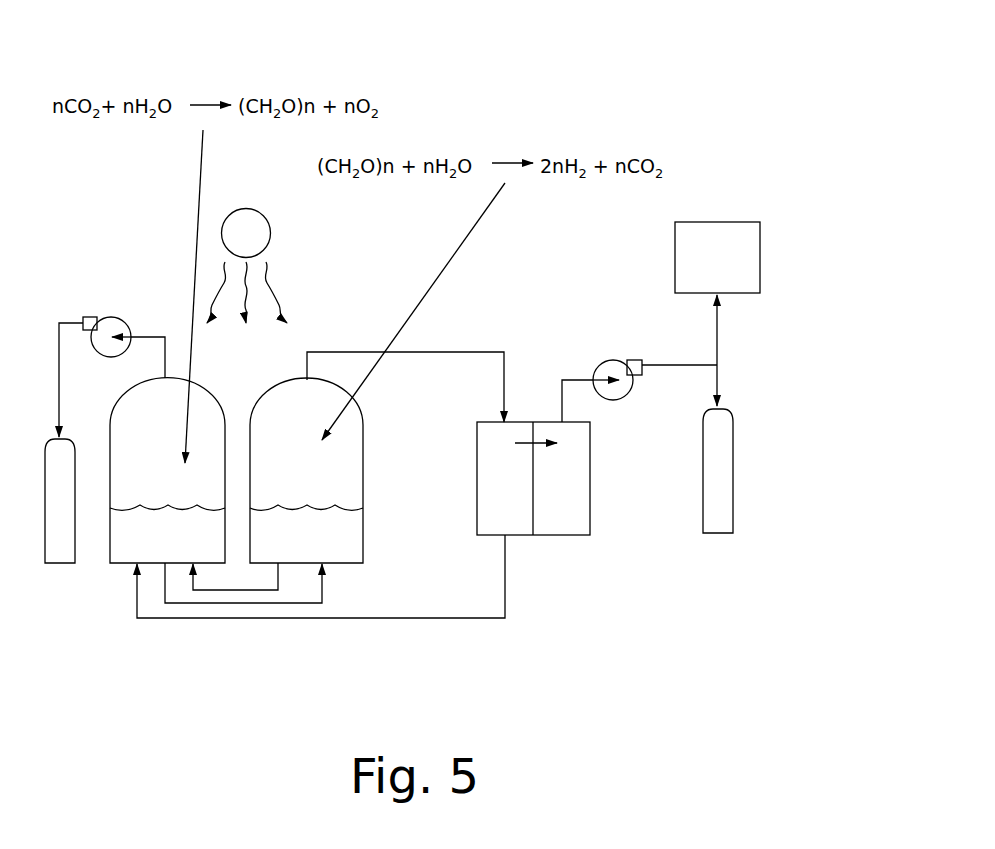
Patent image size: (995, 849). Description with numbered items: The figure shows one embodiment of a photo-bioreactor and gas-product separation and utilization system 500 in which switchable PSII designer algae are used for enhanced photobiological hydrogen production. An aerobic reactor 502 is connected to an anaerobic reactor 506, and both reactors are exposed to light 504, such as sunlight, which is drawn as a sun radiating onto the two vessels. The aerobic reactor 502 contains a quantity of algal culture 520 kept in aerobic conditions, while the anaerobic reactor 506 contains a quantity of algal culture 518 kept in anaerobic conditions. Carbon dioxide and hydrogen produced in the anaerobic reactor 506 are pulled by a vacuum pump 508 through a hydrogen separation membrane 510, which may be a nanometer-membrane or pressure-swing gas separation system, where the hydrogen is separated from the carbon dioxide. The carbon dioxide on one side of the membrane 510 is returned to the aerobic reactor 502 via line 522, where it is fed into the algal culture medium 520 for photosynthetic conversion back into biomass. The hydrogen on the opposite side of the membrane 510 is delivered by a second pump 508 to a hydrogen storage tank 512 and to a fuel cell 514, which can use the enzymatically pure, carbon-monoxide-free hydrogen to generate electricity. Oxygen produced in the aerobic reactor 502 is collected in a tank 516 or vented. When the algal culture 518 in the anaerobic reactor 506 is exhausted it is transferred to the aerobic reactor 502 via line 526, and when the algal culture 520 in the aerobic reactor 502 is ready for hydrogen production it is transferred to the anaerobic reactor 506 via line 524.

The photo-bioreactor and gas-product separation and utilization system 500 is at (673, 85).
The aerobic reactor 502 is at (225, 397).
The light 504 is at (302, 277).
The anaerobic reactor 506 is at (363, 422).
The vacuum pump 508 is at (95, 317).
The H2 separation membrane 510 is at (477, 478).
The H2 storage tank 512 is at (703, 473).
The fuel cell 514 is at (733, 295).
The tank 516 is at (62, 565).
The algal culture 518 is at (326, 546).
The algal culture 520 is at (186, 546).
The line 522 is at (440, 622).
The line 524 is at (275, 605).
The line 526 is at (222, 590).